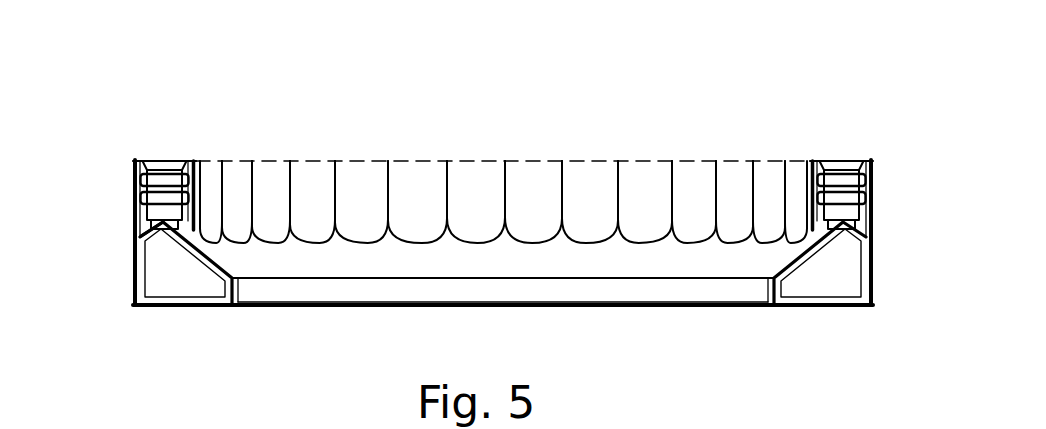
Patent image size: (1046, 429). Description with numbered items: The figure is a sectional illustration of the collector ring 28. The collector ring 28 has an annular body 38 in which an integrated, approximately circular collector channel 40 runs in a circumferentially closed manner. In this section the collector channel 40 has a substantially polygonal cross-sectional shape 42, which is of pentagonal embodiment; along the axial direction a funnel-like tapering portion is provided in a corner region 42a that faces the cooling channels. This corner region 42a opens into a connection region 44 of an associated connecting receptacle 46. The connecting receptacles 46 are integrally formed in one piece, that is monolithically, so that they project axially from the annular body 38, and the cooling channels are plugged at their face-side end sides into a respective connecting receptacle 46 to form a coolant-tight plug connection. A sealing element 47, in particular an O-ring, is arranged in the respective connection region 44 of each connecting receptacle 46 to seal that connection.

The collector ring 28 is at (769, 96).
The annular body 38 is at (296, 308).
The collector channel 40 is at (181, 284).
The cross-sectional shape 42 is at (140, 274).
The corner region 42a is at (140, 240).
The connection region 44 is at (534, 155).
The sealing element 47 is at (163, 177).
The connecting receptacle 46 is at (133, 168).